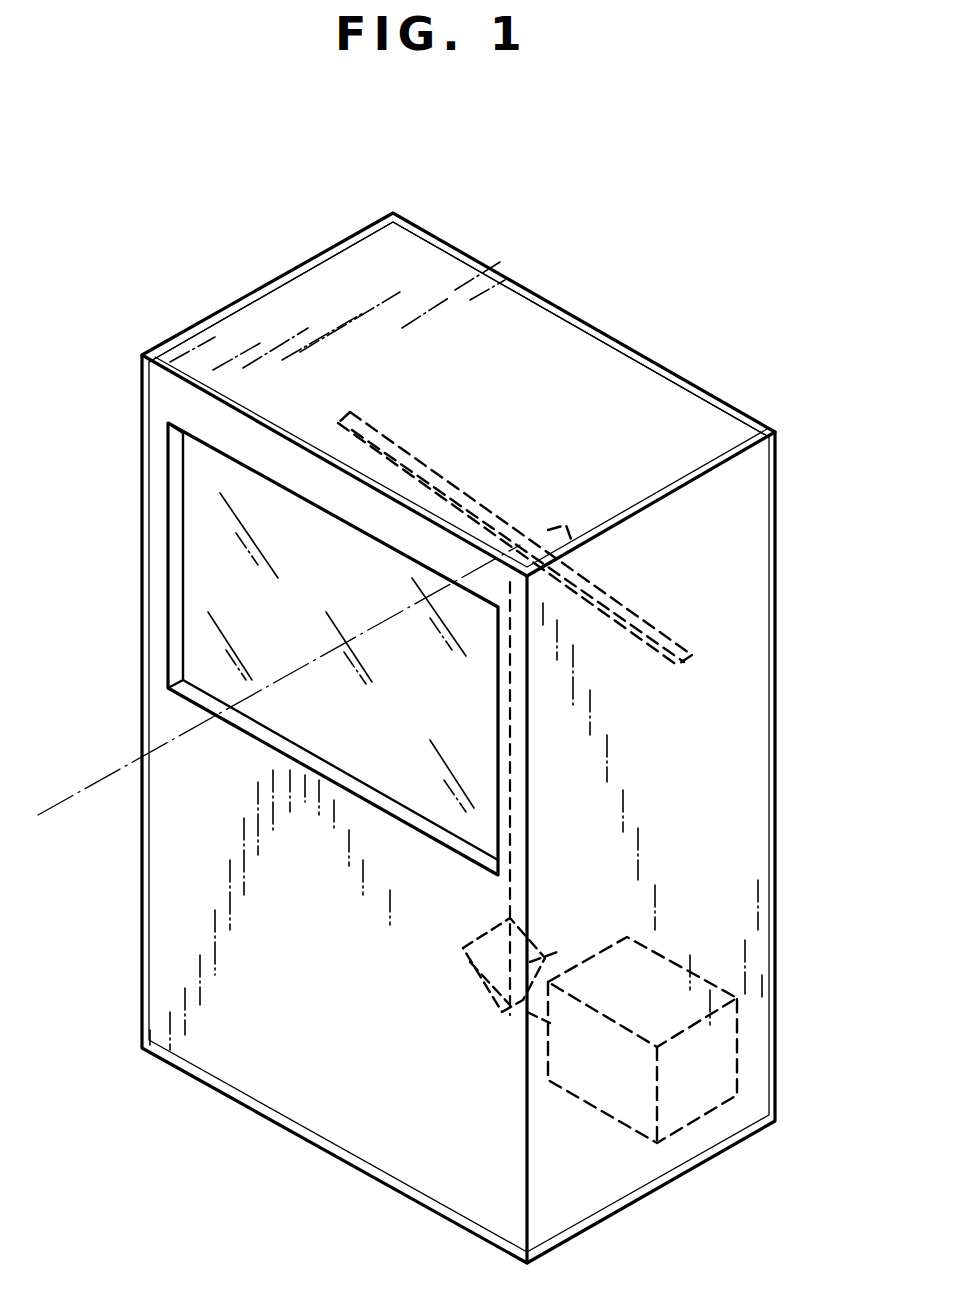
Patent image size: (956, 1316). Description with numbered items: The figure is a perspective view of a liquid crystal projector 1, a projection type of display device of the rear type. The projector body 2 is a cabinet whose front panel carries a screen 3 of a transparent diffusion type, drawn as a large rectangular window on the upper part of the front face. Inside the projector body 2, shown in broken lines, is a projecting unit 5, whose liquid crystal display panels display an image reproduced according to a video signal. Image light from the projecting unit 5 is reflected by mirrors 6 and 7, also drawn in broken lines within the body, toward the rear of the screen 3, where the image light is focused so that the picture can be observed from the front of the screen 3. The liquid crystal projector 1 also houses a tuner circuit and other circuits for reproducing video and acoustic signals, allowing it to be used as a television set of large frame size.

The liquid crystal projector 1 is at (508, 273).
The projector body 2 is at (672, 404).
The screen 3 is at (200, 484).
The projecting unit 5 is at (655, 946).
The mirror 6 is at (462, 988).
The mirror 7 is at (430, 450).